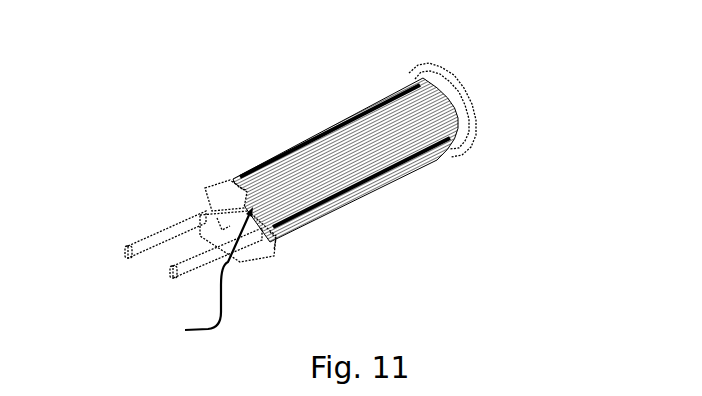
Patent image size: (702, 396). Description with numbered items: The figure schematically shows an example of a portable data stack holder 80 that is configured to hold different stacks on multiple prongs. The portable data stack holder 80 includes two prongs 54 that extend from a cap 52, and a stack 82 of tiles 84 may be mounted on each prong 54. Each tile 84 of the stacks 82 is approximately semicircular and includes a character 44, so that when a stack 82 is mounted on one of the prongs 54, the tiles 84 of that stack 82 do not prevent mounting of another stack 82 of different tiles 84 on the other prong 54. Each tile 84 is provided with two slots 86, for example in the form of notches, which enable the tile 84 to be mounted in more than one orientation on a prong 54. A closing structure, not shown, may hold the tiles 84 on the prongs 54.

The portable data stack holder 80 is at (308, 81).
The cap 52 is at (470, 127).
The stack 82 is at (453, 105).
The tile 84 is at (232, 202).
The slot 86 is at (238, 188).
The prong 54 is at (171, 280).
The character 44 is at (201, 278).